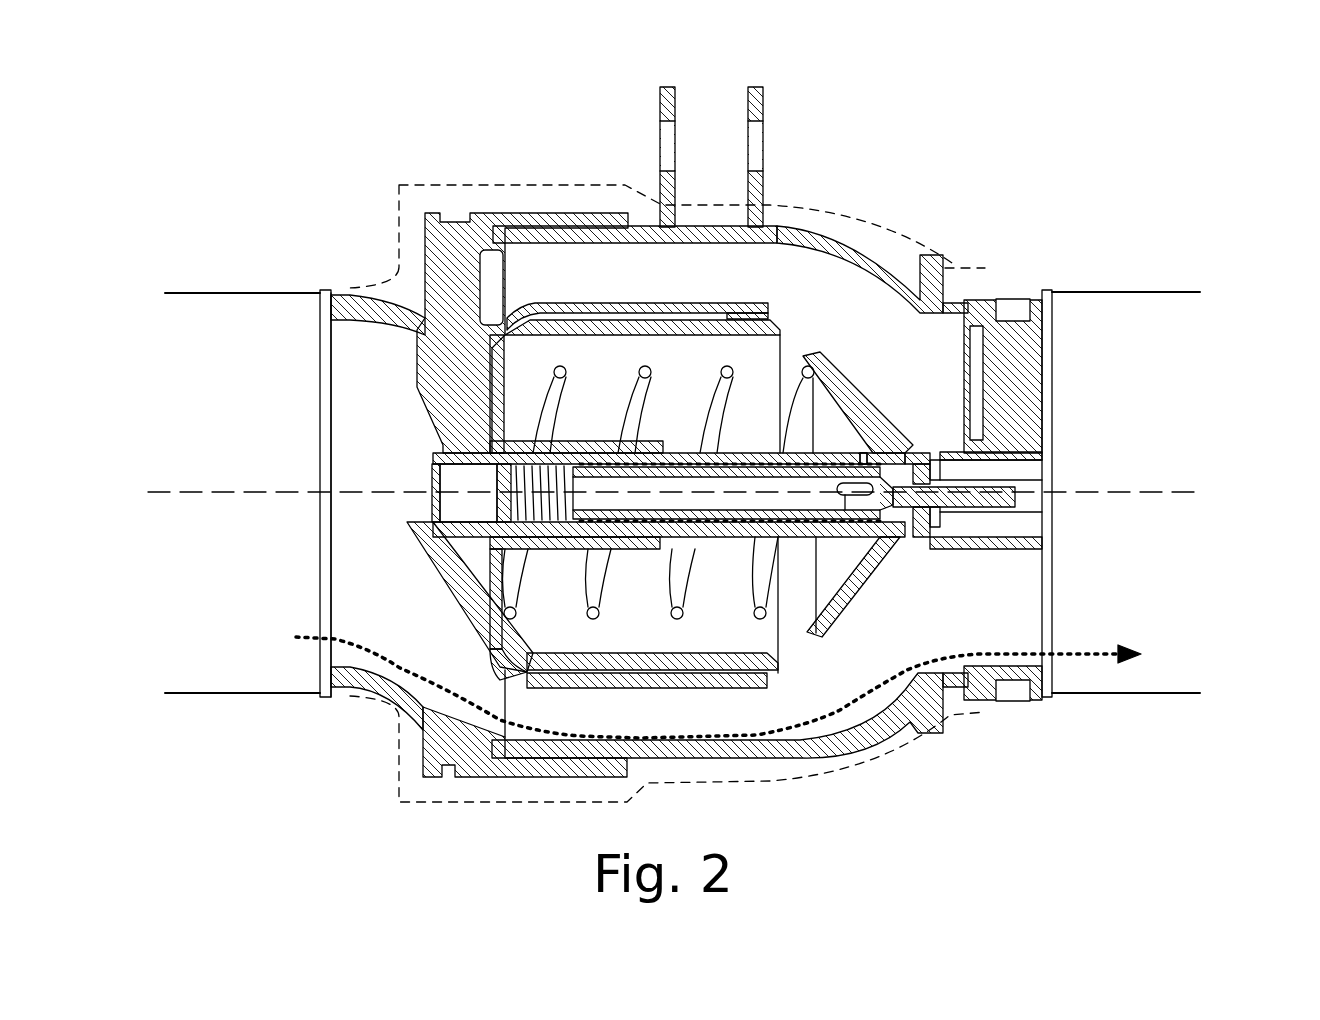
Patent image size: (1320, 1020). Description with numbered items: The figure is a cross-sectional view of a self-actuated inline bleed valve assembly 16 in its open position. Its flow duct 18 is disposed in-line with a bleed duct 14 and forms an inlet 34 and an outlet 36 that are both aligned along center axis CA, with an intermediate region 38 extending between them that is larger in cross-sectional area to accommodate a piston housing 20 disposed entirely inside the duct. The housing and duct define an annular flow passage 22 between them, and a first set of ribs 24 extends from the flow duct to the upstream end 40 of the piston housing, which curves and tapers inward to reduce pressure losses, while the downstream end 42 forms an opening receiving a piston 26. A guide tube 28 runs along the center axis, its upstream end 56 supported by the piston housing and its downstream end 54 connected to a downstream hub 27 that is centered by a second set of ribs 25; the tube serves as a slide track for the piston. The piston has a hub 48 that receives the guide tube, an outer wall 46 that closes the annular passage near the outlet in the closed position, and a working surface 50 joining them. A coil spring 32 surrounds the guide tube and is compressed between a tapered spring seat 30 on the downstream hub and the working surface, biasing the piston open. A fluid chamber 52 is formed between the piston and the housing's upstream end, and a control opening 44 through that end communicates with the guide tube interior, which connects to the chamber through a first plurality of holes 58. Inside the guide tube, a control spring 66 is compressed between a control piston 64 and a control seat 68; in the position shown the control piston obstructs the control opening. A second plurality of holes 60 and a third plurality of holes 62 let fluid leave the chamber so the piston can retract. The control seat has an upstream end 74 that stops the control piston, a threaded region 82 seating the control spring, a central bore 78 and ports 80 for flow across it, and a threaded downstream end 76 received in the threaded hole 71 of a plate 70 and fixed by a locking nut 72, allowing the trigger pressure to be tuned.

The bleed duct 14 is at (228, 292).
The bleed valve assembly 16 is at (340, 118).
The flow duct 18 is at (840, 245).
The piston housing 20 is at (580, 302).
The annular flow passage 22 is at (676, 729).
The first set of ribs 24 is at (450, 312).
The second set of ribs 25 is at (1037, 364).
The piston 26 is at (648, 653).
The downstream hub 27 is at (1007, 549).
The guide tube 28 is at (683, 453).
The spring seat 30 is at (830, 366).
The spring 32 is at (690, 594).
The inlet 34 is at (318, 563).
The outlet 36 is at (1052, 611).
The intermediate region 38 is at (687, 758).
The upstream end 40 is at (453, 603).
The downstream end 42 is at (767, 304).
The control opening 44 is at (413, 481).
The outer wall 46 is at (625, 327).
The hub 48 is at (600, 447).
The working surface 50 is at (493, 600).
The fluid chamber 52 is at (480, 413).
The downstream end 54 is at (913, 450).
The upstream end 56 is at (433, 450).
The first plurality of holes 58 is at (453, 567).
The second plurality of holes 60 is at (597, 572).
The third plurality of holes 62 is at (863, 452).
The control piston 64 is at (450, 502).
The control spring 66 is at (602, 537).
The control seat 68 is at (737, 530).
The plate 70 is at (923, 540).
The threaded hole 71 is at (925, 455).
The locking nut 72 is at (960, 481).
The upstream end 74 is at (579, 453).
The downstream end 76 is at (1017, 500).
The central bore 78 is at (757, 496).
The ports 80 is at (847, 498).
The threaded region 82 is at (800, 537).